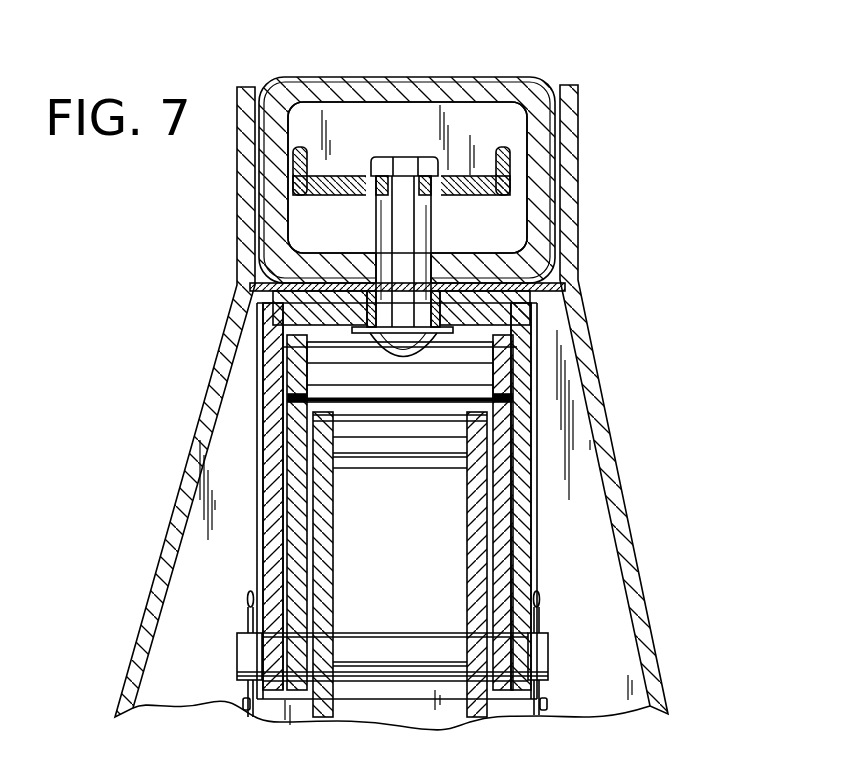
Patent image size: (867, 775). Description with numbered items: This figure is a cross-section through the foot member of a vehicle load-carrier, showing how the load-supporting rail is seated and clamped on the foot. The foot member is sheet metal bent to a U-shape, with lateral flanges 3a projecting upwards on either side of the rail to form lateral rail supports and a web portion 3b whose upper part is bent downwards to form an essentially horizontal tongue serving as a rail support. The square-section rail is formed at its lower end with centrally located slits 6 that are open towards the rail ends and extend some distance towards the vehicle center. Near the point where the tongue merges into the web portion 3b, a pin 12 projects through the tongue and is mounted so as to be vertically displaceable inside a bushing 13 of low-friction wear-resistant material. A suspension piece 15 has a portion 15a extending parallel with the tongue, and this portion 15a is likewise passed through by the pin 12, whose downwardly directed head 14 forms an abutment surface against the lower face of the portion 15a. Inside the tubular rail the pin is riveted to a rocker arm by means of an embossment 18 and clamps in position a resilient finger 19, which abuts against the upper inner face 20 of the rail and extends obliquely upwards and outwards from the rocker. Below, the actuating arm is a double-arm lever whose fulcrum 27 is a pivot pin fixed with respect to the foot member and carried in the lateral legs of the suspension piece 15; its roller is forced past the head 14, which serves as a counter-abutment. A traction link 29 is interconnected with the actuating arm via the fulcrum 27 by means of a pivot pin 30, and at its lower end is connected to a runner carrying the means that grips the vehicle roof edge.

The lateral flanges 3a is at (172, 526).
The web portion 3b is at (600, 538).
The slits 6 is at (437, 252).
The pin 12 is at (388, 233).
The bushing 13 is at (345, 297).
The head 14 is at (380, 354).
The suspension piece 15 is at (537, 568).
The portion 15a is at (553, 290).
The embossment 18 is at (443, 157).
The resilient finger 19 is at (408, 147).
The upper inner face 20 is at (467, 100).
The fulcrum 27 is at (243, 660).
The traction link 29 is at (427, 700).
The pivot pin 30 is at (373, 446).